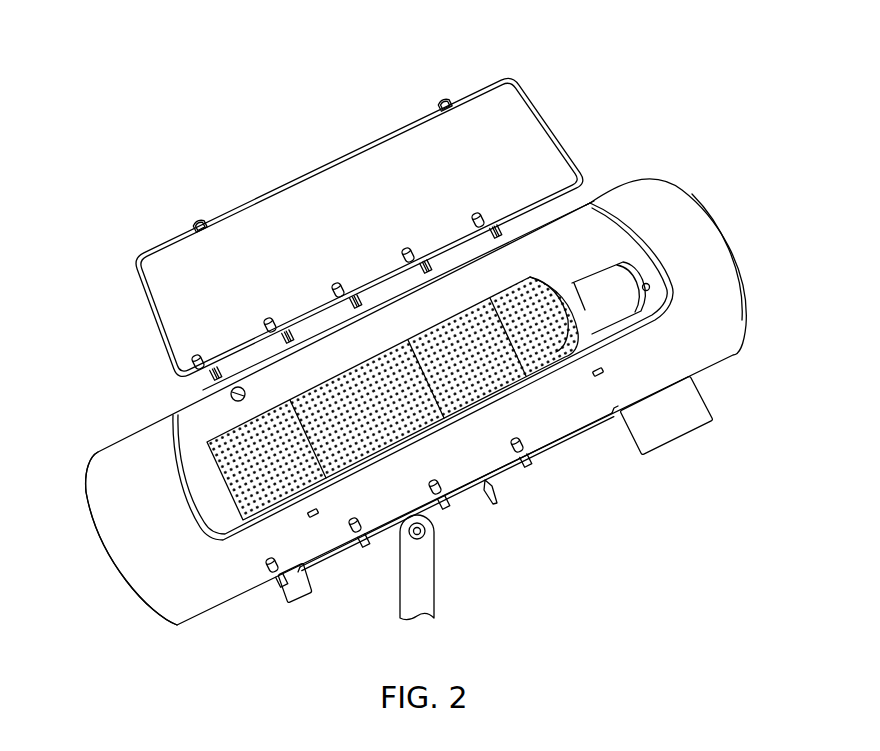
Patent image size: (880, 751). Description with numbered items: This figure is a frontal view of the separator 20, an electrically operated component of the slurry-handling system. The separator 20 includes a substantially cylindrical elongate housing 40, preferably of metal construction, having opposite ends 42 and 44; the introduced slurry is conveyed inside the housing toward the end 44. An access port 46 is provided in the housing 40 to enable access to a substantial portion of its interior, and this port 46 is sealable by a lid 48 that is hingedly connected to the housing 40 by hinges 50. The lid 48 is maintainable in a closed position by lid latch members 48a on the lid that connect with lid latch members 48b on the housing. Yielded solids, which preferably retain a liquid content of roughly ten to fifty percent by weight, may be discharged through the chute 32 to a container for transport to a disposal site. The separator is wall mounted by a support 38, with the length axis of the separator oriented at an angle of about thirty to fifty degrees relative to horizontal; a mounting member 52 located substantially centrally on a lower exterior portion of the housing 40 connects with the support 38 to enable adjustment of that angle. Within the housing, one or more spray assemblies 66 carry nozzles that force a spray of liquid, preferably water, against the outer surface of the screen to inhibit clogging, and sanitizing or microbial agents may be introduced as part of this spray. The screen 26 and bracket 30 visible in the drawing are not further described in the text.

The separator 20 is at (612, 106).
The screen 26 is at (225, 365).
The mounting bracket 30 is at (285, 592).
The chute 32 is at (670, 445).
The support 38 is at (425, 572).
The housing 40 is at (660, 195).
The end 42 is at (97, 527).
The end 44 is at (713, 222).
The access port 46 is at (590, 202).
The lid 48 is at (291, 180).
The lid latch member 48a is at (200, 220).
The lid latch member 48b is at (315, 519).
The hinge 50 is at (252, 358).
The mounting member 52 is at (432, 522).
The spray assembly 66 is at (529, 470).